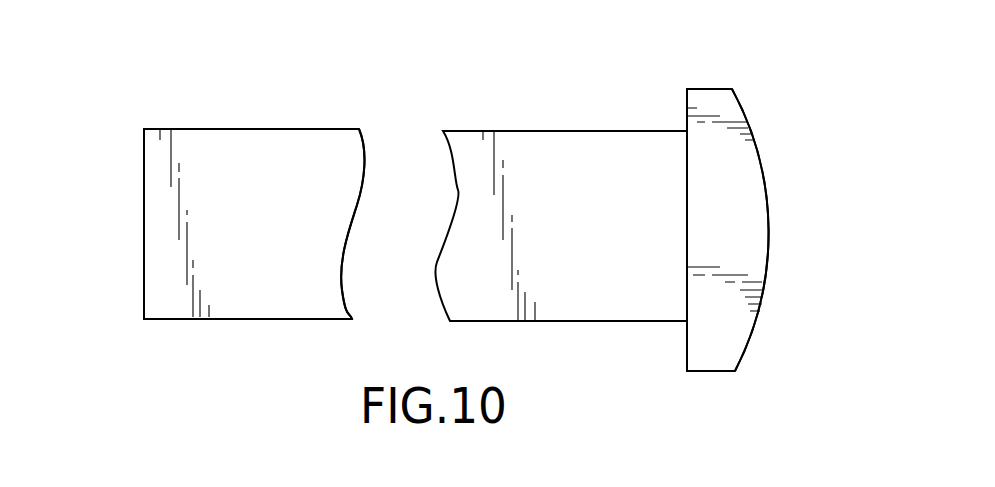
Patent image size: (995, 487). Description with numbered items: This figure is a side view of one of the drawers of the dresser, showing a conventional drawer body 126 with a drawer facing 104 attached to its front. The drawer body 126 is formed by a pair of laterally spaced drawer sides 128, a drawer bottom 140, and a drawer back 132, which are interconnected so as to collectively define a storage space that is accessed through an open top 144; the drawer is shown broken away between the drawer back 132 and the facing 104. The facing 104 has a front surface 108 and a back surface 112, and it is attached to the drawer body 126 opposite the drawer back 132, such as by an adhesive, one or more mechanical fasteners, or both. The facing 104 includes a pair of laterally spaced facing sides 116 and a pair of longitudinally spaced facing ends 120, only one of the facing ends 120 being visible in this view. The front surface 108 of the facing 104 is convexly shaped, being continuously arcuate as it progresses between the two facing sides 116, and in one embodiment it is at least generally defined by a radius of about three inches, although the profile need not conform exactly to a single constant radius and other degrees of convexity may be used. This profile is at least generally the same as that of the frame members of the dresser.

The facing 104 is at (750, 115).
The front surface 108 is at (766, 228).
The back surface 112 is at (687, 176).
The facing sides 116 is at (715, 88).
The facing ends 120 is at (718, 317).
The drawer body 126 is at (144, 288).
The drawer sides 128 is at (227, 152).
The drawer back 132 is at (145, 202).
The drawer bottom 140 is at (183, 320).
The open top 144 is at (343, 128).